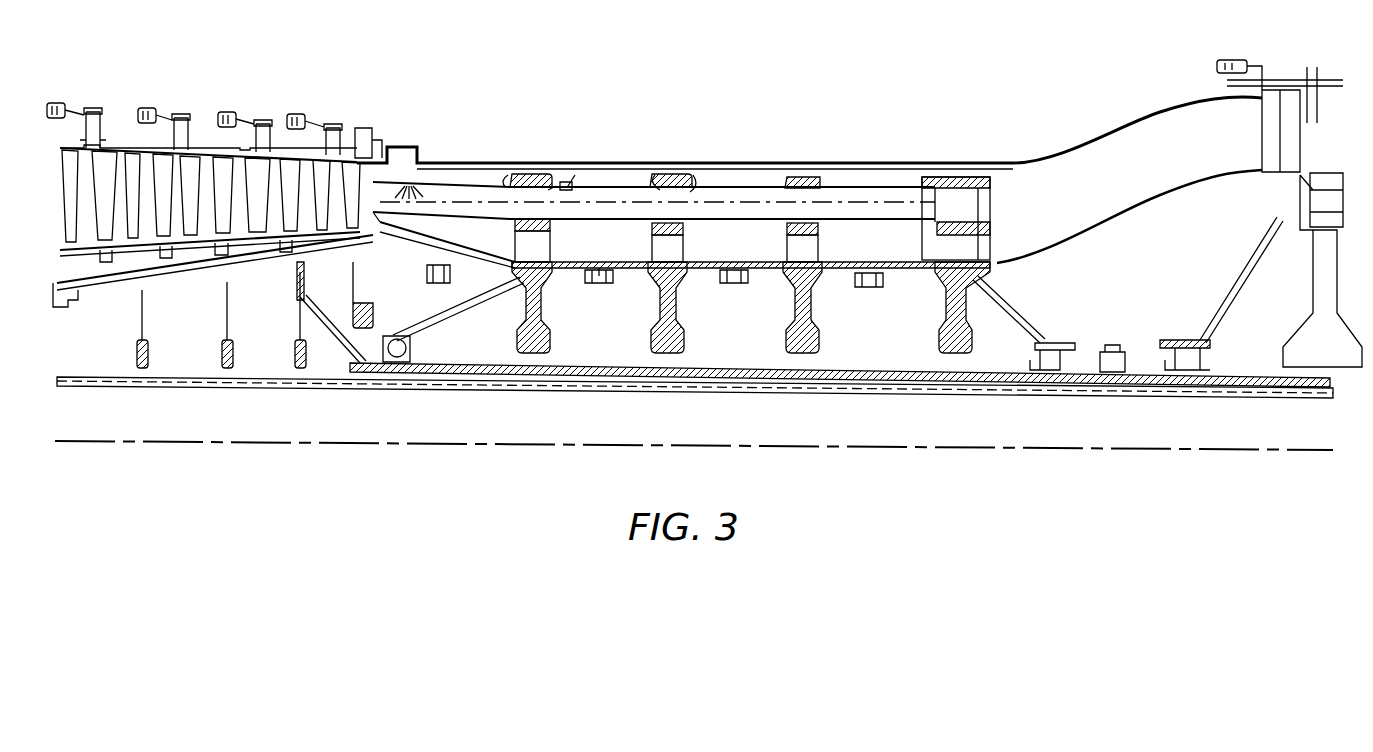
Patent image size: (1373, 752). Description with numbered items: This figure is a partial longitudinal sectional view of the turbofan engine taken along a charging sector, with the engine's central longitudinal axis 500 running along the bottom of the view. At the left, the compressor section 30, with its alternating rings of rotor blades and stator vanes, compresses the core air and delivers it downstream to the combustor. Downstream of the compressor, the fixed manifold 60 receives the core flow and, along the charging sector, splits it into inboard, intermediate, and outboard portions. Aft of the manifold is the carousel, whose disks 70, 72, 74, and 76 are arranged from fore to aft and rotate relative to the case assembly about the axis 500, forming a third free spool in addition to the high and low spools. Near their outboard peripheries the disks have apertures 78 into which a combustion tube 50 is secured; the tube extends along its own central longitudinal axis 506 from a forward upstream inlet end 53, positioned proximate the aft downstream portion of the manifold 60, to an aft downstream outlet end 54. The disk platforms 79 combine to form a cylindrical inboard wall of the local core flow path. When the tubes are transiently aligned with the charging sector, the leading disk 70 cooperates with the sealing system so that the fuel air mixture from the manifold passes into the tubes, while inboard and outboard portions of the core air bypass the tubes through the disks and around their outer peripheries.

The compressor section 30 is at (214, 102).
The fixed manifold 60 is at (445, 150).
The apertures 78 is at (508, 185).
The forward upstream inlet end 53 is at (566, 185).
The combustion tube 50 is at (745, 186).
The aft downstream outlet end 54 is at (945, 200).
The disk platforms 79 is at (565, 266).
The central longitudinal axis 506 is at (848, 207).
The disk 70 is at (536, 358).
The disk 72 is at (669, 358).
The disk 74 is at (801, 358).
The disk 76 is at (956, 358).
The central longitudinal axis 500 is at (903, 452).